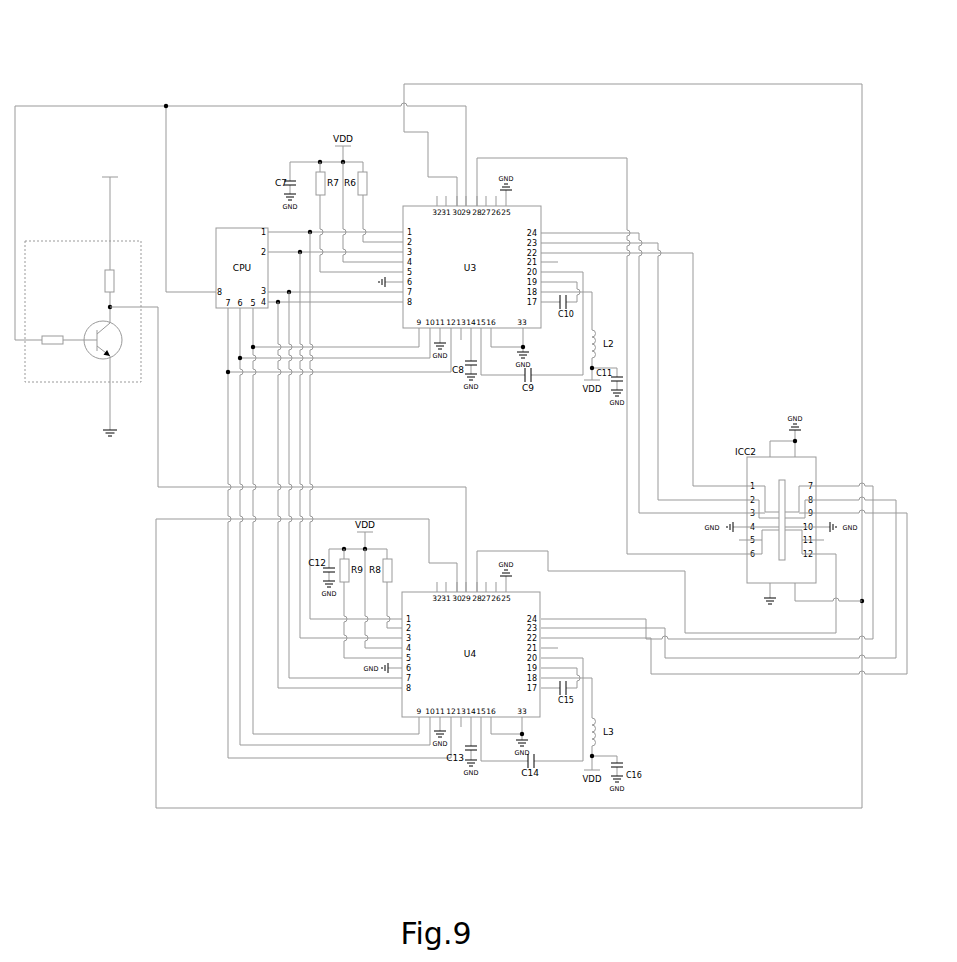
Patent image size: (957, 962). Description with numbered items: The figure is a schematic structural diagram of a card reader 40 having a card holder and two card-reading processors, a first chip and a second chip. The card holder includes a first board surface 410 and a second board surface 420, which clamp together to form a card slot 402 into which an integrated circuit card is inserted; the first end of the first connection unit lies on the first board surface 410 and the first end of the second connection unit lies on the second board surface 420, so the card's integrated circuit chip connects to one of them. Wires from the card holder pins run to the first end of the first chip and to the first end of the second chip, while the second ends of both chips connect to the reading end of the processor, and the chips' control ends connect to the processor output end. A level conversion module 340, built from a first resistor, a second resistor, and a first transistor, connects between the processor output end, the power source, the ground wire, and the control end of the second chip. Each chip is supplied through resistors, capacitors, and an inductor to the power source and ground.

The card reader 40 is at (466, 52).
The level conversion module 340 is at (83, 241).
The card slot 402 is at (781, 556).
The first board surface 410 is at (781, 484).
The second board surface 420 is at (787, 483).